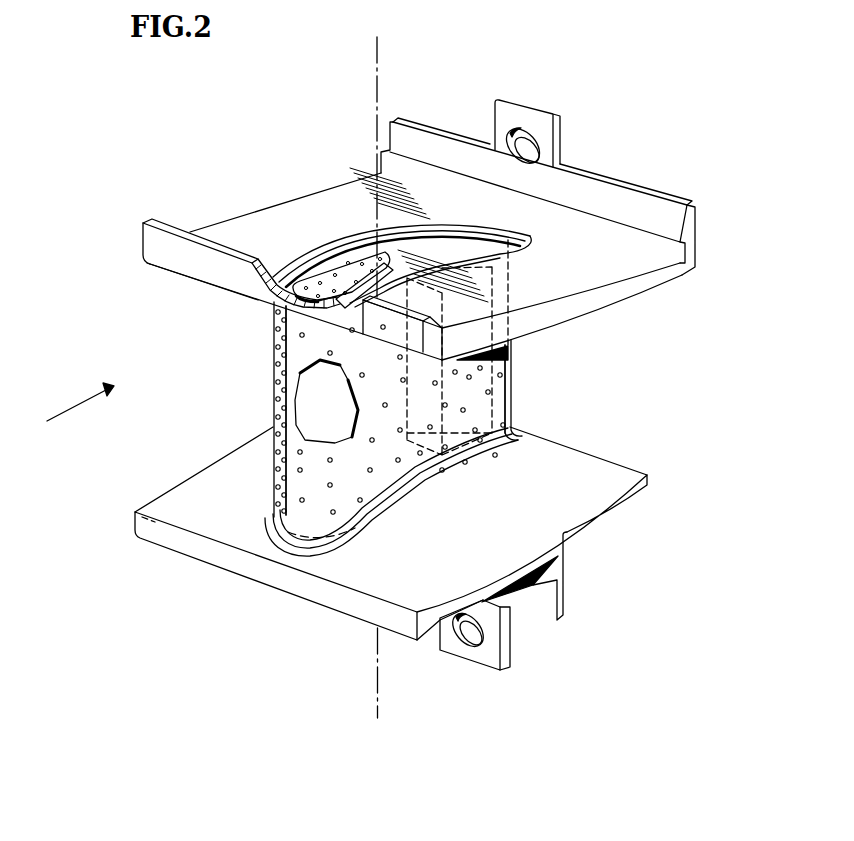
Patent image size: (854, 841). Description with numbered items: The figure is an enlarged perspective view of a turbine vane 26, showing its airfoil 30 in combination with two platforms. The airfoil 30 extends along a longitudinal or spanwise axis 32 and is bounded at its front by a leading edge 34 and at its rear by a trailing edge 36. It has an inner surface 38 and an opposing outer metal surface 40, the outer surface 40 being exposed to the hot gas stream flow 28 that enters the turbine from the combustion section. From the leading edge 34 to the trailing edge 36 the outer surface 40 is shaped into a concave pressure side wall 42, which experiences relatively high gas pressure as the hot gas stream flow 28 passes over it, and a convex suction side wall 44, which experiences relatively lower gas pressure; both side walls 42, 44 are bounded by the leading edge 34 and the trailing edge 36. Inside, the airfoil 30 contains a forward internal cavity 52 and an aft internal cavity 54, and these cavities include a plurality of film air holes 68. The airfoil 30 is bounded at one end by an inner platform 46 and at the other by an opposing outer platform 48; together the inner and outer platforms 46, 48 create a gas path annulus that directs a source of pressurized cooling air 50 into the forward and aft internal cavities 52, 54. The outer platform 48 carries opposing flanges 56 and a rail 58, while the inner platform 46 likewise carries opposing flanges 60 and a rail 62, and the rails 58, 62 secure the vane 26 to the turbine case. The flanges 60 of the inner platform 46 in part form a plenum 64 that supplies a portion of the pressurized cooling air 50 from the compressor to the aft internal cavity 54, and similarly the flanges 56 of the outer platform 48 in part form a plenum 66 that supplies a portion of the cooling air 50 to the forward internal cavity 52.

The vane 26 is at (220, 161).
The hot gas stream flow 28 is at (67, 415).
The airfoil 30 is at (450, 458).
The span wise axis 32 is at (379, 68).
The leading edge 34 is at (276, 410).
The trailing edge 36 is at (508, 392).
The inner surface 38 is at (300, 422).
The outer surface 40 is at (403, 378).
The pressure side wall 42 is at (392, 466).
The suction side wall 44 is at (273, 322).
The inner platform 46 is at (180, 498).
The outer platform 48 is at (320, 200).
The pressurized cooling air 50 is at (310, 276).
The forward internal cavity 52 is at (367, 253).
The aft internal cavity 54 is at (490, 457).
The flanges 56 is at (171, 224).
The rail 58 is at (526, 105).
The flanges 60 is at (232, 563).
The rail 62 is at (505, 664).
The plenum 64 is at (477, 600).
The plenum 66 is at (405, 220).
The film air holes 68 is at (330, 488).